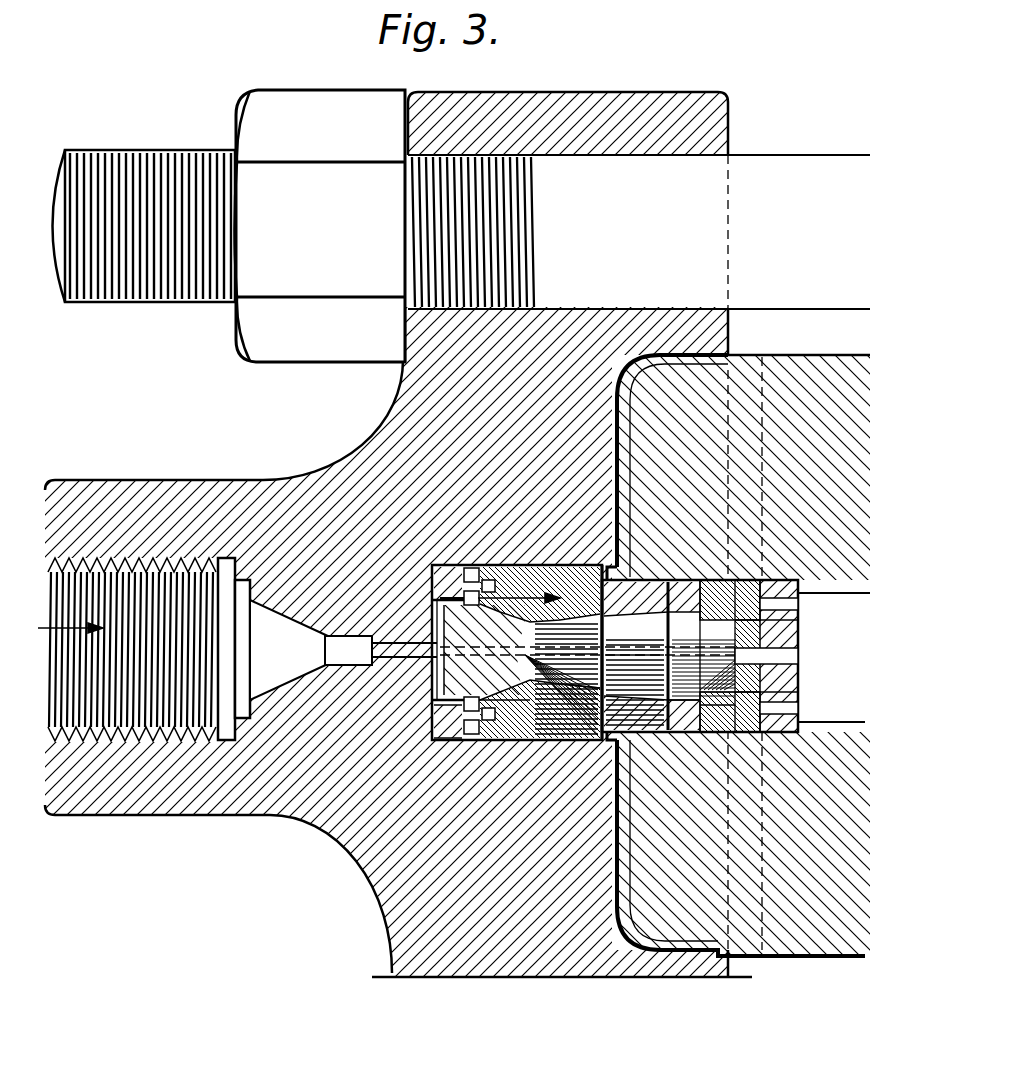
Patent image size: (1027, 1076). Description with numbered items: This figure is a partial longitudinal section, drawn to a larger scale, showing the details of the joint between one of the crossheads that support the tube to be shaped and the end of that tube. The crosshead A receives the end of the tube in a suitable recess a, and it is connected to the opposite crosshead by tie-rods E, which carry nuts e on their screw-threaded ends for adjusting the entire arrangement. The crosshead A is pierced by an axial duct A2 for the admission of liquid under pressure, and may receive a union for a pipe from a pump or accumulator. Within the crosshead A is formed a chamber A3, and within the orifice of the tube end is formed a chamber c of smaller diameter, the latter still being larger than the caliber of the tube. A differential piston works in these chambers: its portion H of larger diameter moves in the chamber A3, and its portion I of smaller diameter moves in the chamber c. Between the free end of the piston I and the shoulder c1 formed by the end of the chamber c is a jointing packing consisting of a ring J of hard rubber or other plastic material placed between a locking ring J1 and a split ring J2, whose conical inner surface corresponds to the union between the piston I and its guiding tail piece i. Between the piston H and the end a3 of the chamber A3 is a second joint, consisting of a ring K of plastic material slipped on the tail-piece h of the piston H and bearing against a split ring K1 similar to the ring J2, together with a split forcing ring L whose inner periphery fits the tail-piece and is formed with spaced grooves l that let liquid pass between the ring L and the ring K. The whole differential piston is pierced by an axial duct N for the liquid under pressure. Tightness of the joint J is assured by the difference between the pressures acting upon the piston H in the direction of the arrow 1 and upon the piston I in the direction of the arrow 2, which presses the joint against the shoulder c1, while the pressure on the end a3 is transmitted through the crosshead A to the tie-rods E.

The crosshead A is at (594, 110).
The axial duct A2 is at (348, 657).
The chamber A3 is at (486, 745).
The tie-rod E is at (757, 165).
The nut e is at (245, 345).
The shoulder c1 is at (748, 395).
The recess a is at (618, 443).
The end of chamber A3 a3 is at (433, 725).
The forcing ring L is at (430, 572).
The groove l is at (440, 600).
The ring of plastic material K is at (503, 576).
The split ring K1 is at (540, 578).
The arrow 1 is at (519, 610).
The ring of hard rubber J is at (732, 582).
The locking ring J1 is at (780, 592).
The split ring J2 is at (690, 585).
The guiding tail piece i is at (785, 636).
The axial duct N is at (785, 655).
The tail-piece h is at (508, 738).
The piston portion of larger diameter H is at (587, 718).
The piston portion of smaller diameter I is at (657, 730).
The chamber c is at (688, 735).
The arrow 2 is at (728, 706).